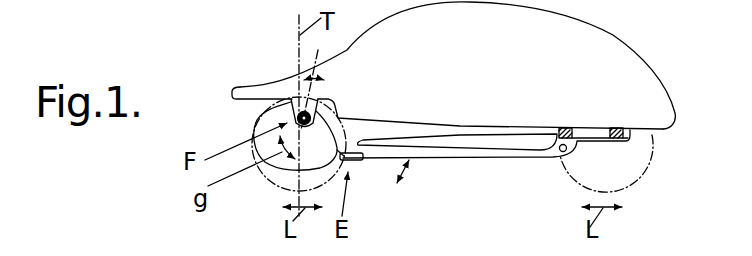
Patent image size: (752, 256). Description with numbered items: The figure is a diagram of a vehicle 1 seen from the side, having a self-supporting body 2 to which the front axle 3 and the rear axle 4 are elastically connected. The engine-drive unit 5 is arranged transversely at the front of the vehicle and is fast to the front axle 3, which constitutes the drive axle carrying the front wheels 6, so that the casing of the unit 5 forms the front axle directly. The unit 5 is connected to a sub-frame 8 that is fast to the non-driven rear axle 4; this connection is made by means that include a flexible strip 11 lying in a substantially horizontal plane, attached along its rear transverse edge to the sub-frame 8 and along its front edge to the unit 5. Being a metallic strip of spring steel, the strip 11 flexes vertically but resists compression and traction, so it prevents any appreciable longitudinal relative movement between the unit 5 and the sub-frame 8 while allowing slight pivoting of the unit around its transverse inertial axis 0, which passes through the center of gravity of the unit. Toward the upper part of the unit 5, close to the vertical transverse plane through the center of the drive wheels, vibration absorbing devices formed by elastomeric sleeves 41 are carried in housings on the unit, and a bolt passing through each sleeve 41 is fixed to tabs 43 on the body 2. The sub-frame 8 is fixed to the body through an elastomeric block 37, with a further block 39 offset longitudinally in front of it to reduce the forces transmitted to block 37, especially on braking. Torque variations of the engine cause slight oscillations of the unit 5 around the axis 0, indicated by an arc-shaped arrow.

The vehicle 1 is at (659, 50).
The self-supporting body 2 is at (617, 35).
The front axle 3 is at (272, 171).
The rear axle 4 is at (659, 138).
The engine-drive unit 5 is at (272, 116).
The front wheels 6 is at (285, 187).
The sub-frame 8 is at (452, 153).
The flexible strip 11 is at (316, 100).
The block of elastomeric material 37 is at (617, 128).
The block of elastomeric material 39 is at (563, 128).
The sleeve of elastomeric material 41 is at (318, 99).
The tab 43 is at (295, 99).
The transverse inertial axis 0 is at (301, 139).